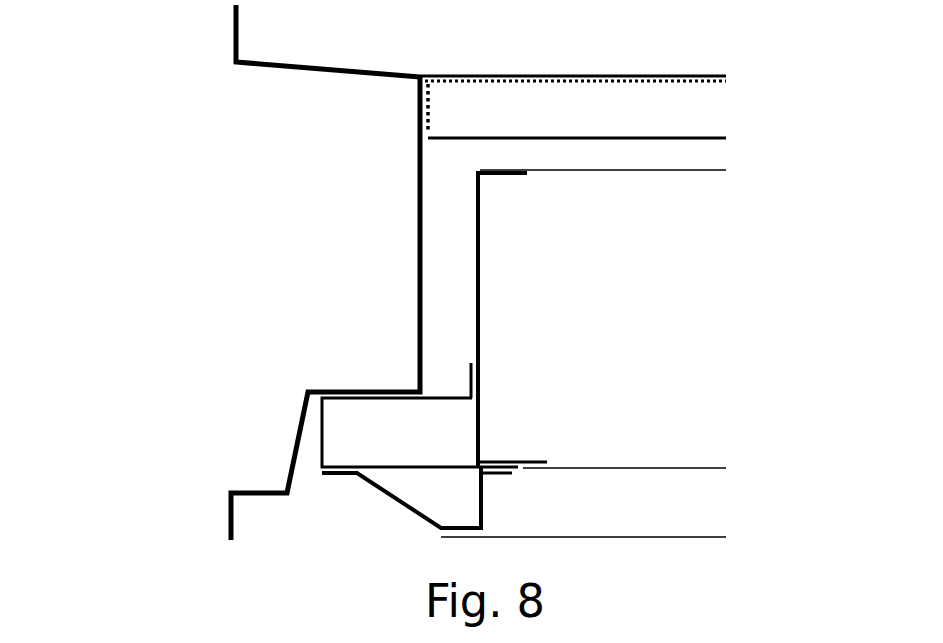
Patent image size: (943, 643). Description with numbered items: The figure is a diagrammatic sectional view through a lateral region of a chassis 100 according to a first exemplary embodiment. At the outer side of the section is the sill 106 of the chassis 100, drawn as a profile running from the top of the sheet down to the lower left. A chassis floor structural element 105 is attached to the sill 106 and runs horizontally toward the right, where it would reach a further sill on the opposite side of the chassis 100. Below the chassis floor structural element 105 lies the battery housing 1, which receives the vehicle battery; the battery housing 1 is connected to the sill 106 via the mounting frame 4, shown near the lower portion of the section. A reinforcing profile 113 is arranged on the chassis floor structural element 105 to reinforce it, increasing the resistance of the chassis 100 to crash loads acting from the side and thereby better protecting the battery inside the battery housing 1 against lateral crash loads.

The chassis 100 is at (126, 86).
The sill 106 is at (285, 68).
The chassis floor structural element 105 is at (570, 76).
The reinforcing profile 113 is at (700, 137).
The battery housing 1 is at (446, 242).
The mounting frame 4 is at (443, 398).